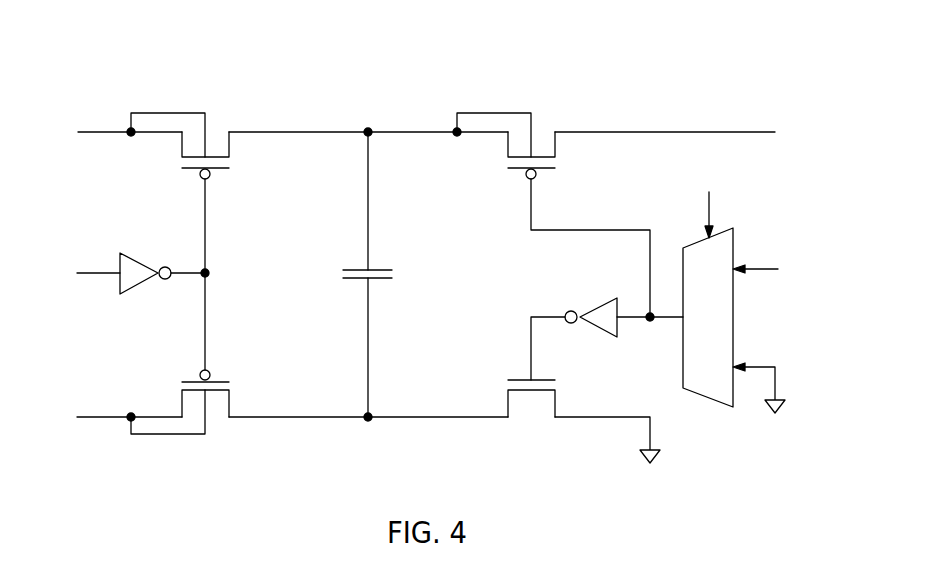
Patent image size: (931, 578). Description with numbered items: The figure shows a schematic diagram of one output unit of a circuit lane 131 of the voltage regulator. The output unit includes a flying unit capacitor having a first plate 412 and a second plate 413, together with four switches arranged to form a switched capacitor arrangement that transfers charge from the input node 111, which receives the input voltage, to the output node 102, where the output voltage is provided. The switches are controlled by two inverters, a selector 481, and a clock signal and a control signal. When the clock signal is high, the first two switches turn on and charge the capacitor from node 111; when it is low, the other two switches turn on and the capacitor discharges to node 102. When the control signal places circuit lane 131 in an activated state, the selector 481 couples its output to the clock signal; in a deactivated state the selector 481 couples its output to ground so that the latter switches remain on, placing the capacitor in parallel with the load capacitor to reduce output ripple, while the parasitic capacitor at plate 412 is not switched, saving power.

The input node 111 is at (98, 130).
The output node 102 is at (703, 130).
The circuit lane 131 is at (429, 244).
The plate of capacitor C_UNIT 412 is at (355, 269).
The plate of capacitor C_UNIT 413 is at (355, 281).
The selector 481 is at (712, 397).